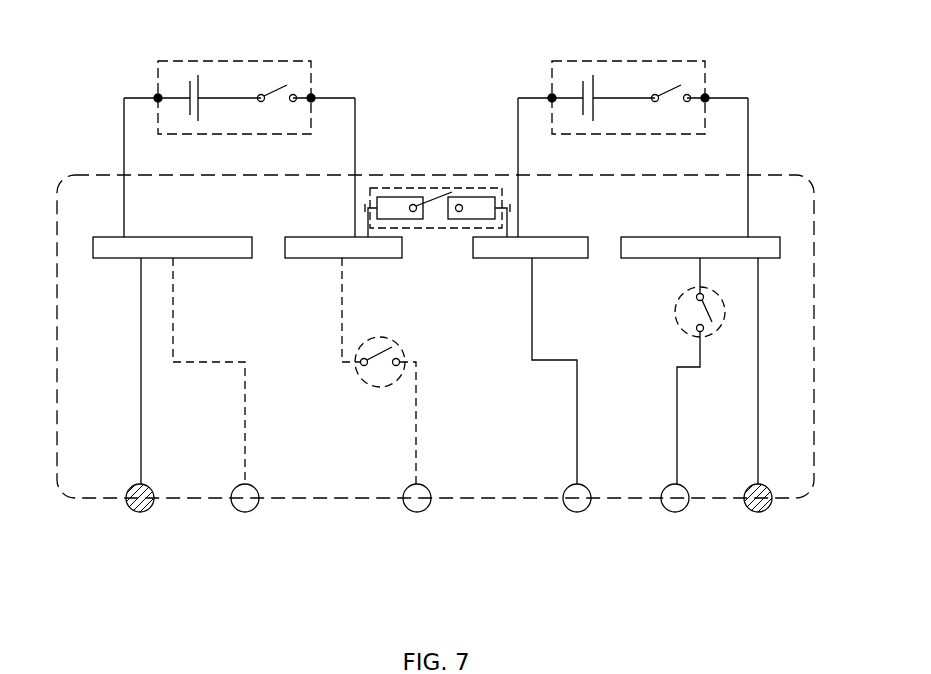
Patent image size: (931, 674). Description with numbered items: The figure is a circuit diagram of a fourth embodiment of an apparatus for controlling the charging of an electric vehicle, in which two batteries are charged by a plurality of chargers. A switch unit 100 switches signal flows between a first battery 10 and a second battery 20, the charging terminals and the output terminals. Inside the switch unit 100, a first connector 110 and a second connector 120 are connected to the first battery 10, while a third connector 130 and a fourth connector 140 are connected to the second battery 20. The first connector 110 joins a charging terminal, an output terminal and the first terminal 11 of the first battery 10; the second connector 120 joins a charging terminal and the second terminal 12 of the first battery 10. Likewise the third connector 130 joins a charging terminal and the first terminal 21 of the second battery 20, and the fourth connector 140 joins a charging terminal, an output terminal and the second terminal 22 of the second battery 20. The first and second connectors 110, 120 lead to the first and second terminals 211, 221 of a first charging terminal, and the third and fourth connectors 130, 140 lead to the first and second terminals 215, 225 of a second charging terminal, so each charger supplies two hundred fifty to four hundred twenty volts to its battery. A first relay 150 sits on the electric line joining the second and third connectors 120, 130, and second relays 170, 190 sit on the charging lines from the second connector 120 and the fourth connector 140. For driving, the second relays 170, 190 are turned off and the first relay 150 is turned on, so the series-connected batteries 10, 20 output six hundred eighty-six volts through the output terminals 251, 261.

The first battery 10 is at (273, 61).
The first terminal of the first battery 11 is at (157, 96).
The second terminal of the first battery 12 is at (312, 96).
The second battery 20 is at (667, 61).
The first terminal of the second battery 21 is at (551, 96).
The second terminal of the second battery 22 is at (706, 96).
The switch unit 100 is at (786, 175).
The first connector 110 is at (222, 258).
The second connector 120 is at (372, 258).
The third connector 130 is at (497, 258).
The fourth connector 140 is at (648, 258).
The first relay 150 is at (485, 188).
The second relay 170 is at (357, 374).
The second relay 190 is at (680, 324).
The first terminal of the first charging terminal 211 is at (245, 512).
The first terminal of the second charging terminal 215 is at (577, 512).
The second terminal of the first charging terminal 221 is at (417, 512).
The second terminal of the second charging terminal 225 is at (675, 512).
The output terminal 251 is at (139, 512).
The output terminal 261 is at (758, 512).